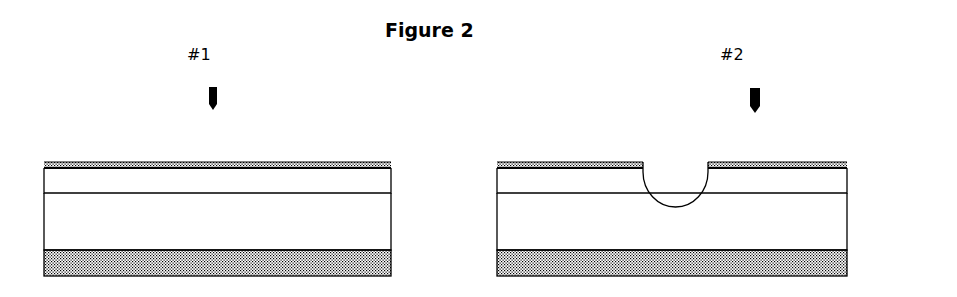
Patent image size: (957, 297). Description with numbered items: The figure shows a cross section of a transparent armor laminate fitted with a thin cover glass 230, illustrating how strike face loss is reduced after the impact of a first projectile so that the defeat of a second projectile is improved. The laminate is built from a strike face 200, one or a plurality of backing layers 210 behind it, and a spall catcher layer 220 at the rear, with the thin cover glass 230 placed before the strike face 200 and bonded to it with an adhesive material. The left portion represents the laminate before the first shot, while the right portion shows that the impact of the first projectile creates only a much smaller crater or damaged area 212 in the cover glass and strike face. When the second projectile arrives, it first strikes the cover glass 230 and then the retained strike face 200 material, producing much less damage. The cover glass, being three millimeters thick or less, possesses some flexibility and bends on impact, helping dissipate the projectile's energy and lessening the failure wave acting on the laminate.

The strike face 200 is at (496, 183).
The backing layers 210 is at (496, 231).
The spall catcher layer 220 is at (496, 263).
The thin cover glass 230 is at (518, 161).
The crater or damaged area 212 is at (708, 161).